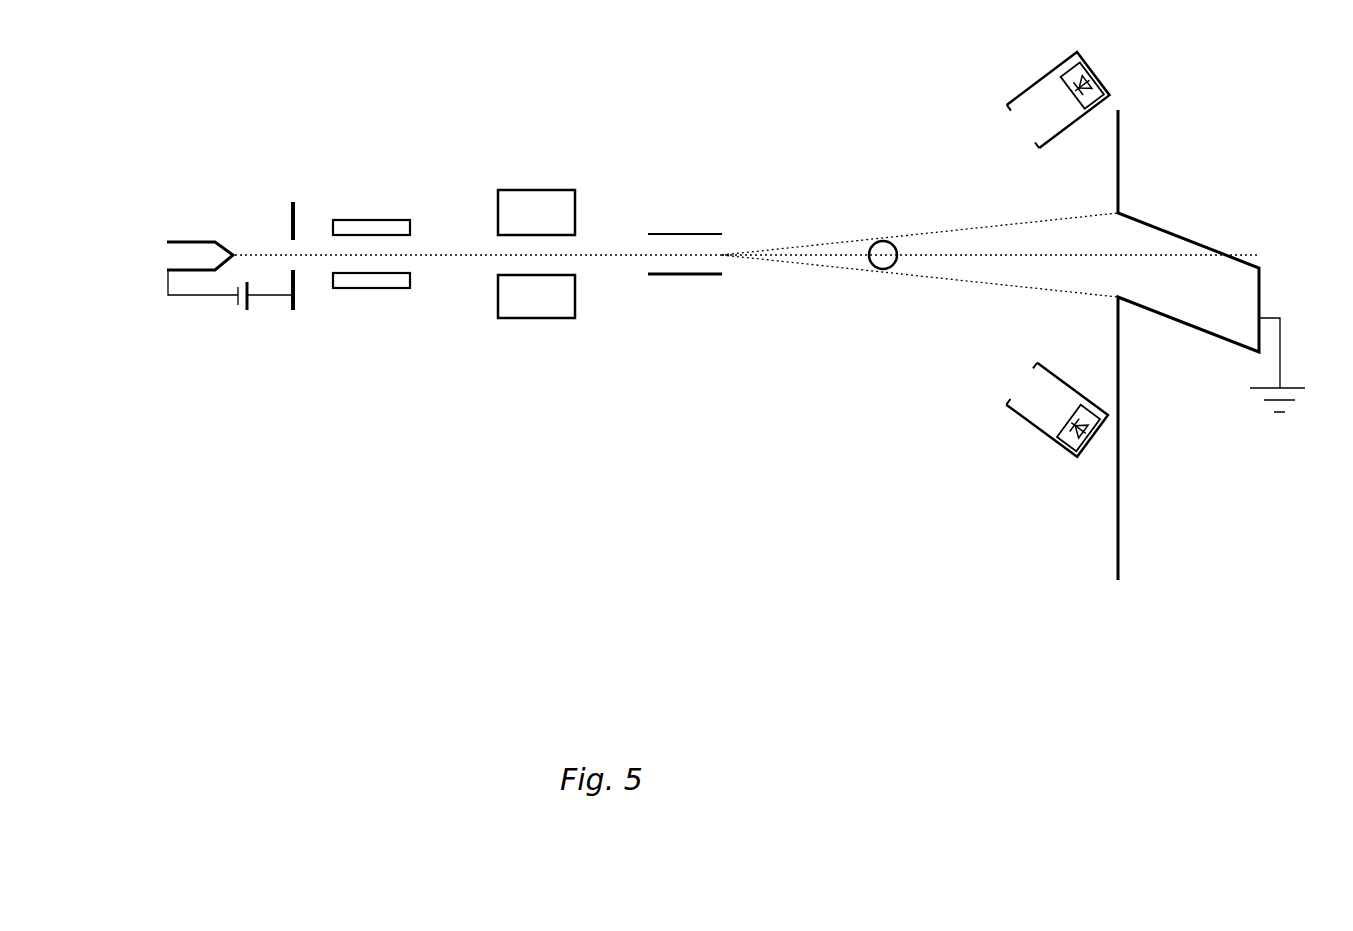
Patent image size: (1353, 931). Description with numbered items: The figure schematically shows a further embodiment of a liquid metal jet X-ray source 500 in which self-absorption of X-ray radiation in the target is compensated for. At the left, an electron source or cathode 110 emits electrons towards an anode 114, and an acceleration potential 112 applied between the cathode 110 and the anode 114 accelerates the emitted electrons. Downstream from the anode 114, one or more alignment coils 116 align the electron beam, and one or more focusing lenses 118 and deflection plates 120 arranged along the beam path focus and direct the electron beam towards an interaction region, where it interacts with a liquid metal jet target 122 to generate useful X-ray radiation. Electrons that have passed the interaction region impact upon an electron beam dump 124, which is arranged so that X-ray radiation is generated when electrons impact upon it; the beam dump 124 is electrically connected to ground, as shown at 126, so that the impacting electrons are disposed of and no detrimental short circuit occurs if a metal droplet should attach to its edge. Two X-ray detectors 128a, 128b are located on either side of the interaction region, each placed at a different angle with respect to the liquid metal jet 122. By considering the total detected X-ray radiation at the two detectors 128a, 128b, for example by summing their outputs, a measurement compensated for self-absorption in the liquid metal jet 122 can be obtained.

The liquid metal jet X-ray source 500 is at (452, 538).
The electron source/cathode 110 is at (193, 242).
The acceleration potential 112 is at (240, 318).
The anode 114 is at (297, 212).
The alignment coils 116 is at (372, 288).
The focusing lenses 118 is at (575, 205).
The deflection plates 120 is at (693, 276).
The liquid metal jet target 122 is at (885, 248).
The electron beam dump 124 is at (1190, 237).
The ground connection 126 is at (1282, 358).
The X-ray detector 128a is at (1035, 430).
The X-ray detector 128b is at (1037, 82).